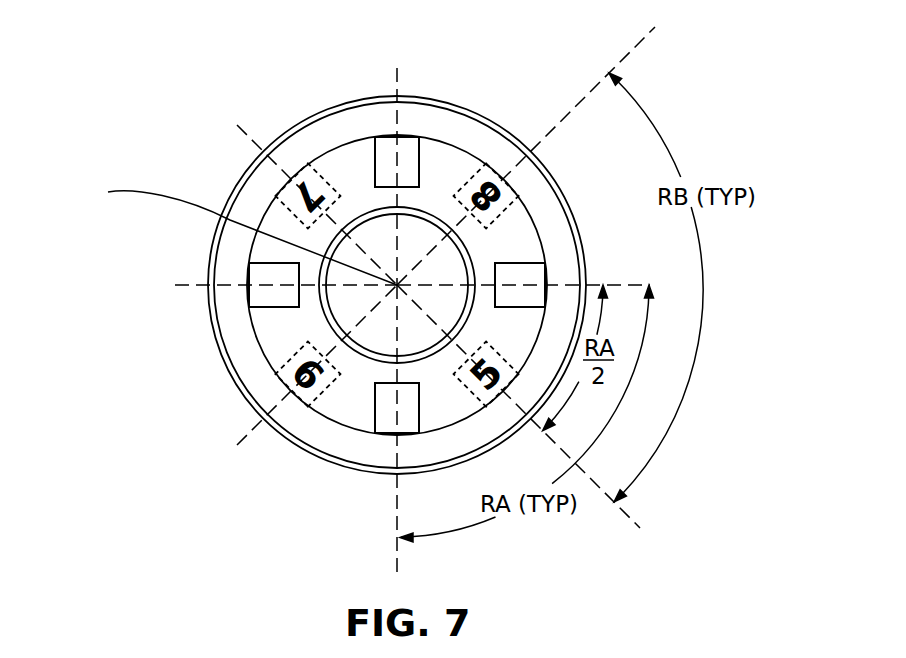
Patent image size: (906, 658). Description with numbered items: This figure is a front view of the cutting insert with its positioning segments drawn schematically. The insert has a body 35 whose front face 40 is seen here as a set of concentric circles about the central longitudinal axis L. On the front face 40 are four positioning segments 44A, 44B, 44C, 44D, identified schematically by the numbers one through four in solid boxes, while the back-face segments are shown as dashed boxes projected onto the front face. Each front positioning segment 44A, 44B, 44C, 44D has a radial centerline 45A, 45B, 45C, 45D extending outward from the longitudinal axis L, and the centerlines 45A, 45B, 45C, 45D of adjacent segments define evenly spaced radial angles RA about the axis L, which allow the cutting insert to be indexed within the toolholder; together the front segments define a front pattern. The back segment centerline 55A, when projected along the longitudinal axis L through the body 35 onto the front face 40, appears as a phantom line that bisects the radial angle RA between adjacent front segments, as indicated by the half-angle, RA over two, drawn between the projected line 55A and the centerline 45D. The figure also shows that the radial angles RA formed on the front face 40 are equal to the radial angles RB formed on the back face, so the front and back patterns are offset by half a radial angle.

The body 35 is at (240, 177).
The front face 40 is at (270, 350).
The central longitudinal axis L is at (245, 234).
The positioning segment 44A is at (383, 422).
The positioning segment 44B is at (252, 302).
The positioning segment 44C is at (413, 148).
The positioning segment 44D is at (547, 262).
The radial centerline 45A is at (394, 518).
The radial centerline 45B is at (180, 283).
The radial centerline 45C is at (393, 72).
The radial centerline 45D is at (624, 285).
The back segment centerline 55A is at (599, 493).